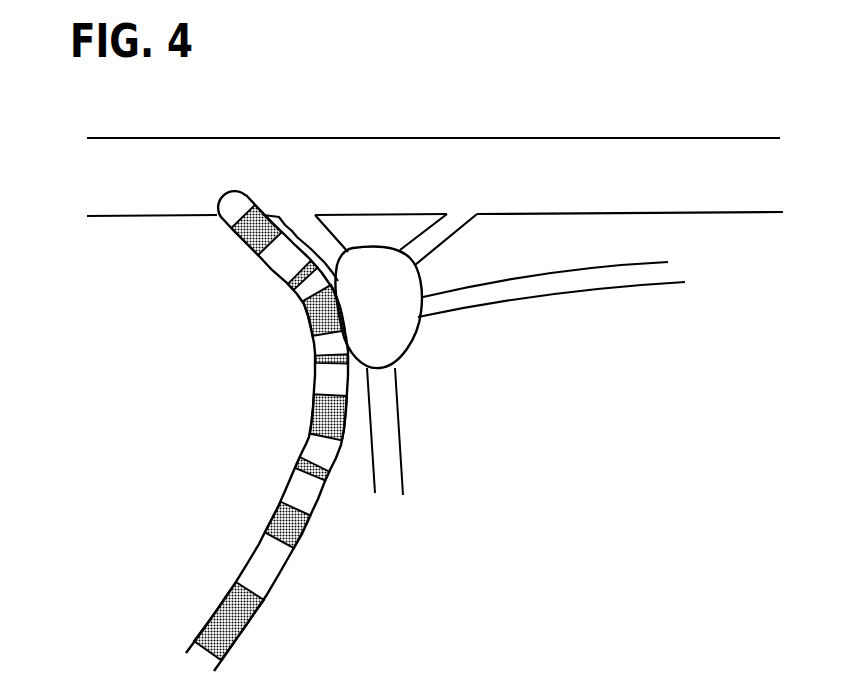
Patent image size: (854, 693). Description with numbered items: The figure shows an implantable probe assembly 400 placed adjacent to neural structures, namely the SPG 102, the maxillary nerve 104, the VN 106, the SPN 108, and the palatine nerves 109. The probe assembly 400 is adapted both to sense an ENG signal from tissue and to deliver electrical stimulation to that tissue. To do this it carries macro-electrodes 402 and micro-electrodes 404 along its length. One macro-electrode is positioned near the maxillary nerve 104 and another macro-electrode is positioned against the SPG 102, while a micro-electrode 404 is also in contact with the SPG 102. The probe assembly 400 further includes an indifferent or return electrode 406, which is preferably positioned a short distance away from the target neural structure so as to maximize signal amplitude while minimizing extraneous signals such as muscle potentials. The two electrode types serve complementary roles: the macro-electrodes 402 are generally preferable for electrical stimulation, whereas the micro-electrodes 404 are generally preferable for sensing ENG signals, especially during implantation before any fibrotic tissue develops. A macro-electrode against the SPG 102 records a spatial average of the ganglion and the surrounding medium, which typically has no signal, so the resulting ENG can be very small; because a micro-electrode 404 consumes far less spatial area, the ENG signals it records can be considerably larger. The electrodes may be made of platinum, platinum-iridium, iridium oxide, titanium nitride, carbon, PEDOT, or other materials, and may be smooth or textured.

The SPG 102 is at (408, 340).
The maxillary nerve 104 is at (693, 163).
The VN 106 is at (657, 285).
The SPN 108 is at (453, 227).
The palatine nerves 109 is at (392, 470).
The probe assembly 400 is at (112, 390).
The macro-electrodes 402 is at (310, 322).
The micro-electrodes 404 is at (313, 362).
The indifferent or return electrode 406 is at (198, 616).